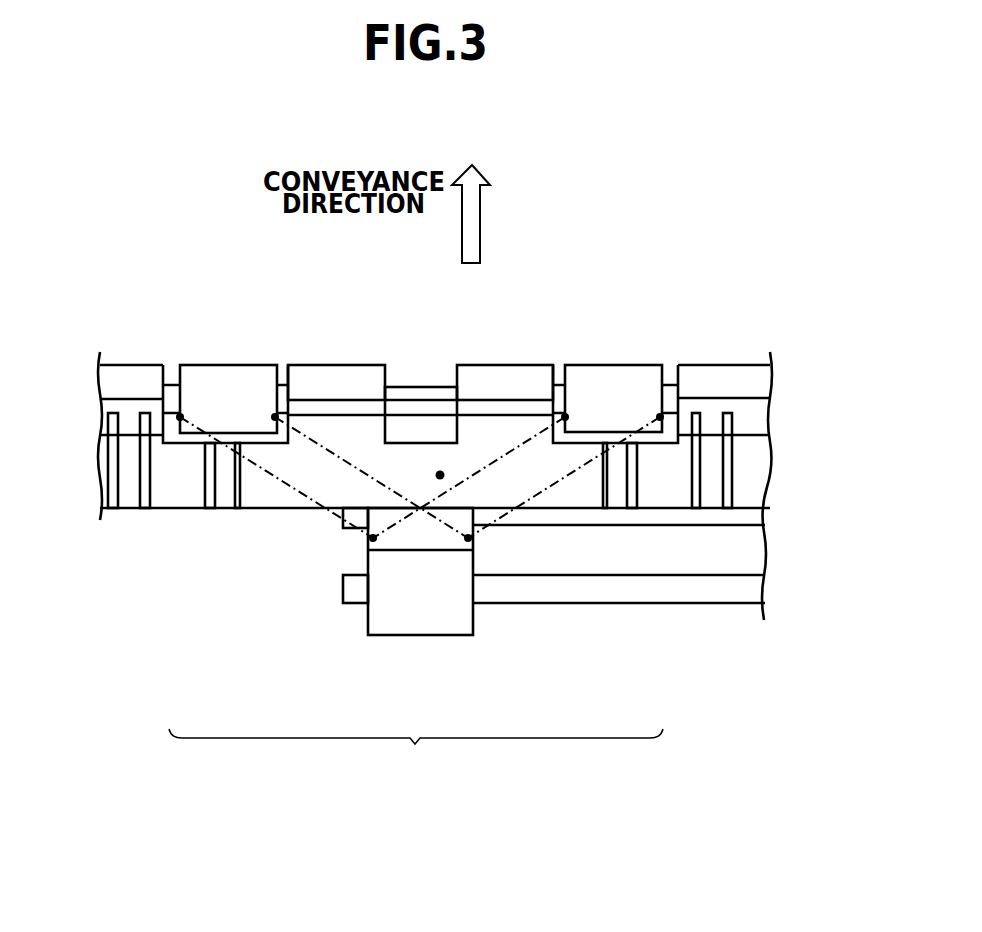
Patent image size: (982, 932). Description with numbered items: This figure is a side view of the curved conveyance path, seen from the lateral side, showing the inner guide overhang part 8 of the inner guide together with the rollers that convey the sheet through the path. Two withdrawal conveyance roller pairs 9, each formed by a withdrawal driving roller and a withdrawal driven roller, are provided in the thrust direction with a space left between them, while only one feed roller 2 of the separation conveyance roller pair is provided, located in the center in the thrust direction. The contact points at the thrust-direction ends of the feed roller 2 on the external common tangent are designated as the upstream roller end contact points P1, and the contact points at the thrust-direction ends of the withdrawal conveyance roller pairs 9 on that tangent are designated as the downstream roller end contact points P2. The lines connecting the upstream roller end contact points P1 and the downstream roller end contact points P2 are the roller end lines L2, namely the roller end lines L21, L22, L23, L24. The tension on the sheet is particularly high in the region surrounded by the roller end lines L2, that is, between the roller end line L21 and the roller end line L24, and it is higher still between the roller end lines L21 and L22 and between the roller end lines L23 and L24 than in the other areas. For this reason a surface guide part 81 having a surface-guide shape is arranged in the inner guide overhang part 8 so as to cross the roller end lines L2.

The inner guide overhang part 8 is at (720, 377).
The withdrawal conveyance roller pairs 9 is at (265, 367).
The downstream roller end contact points P2 is at (275, 417).
The surface guide part 81 is at (440, 475).
The feed roller 2 is at (413, 533).
The upstream roller end contact points P1 is at (373, 538).
The roller end line L21 is at (287, 484).
The roller end line L22 is at (330, 451).
The roller end line L23 is at (488, 465).
The roller end line L24 is at (562, 479).
The roller end lines L2 is at (416, 752).